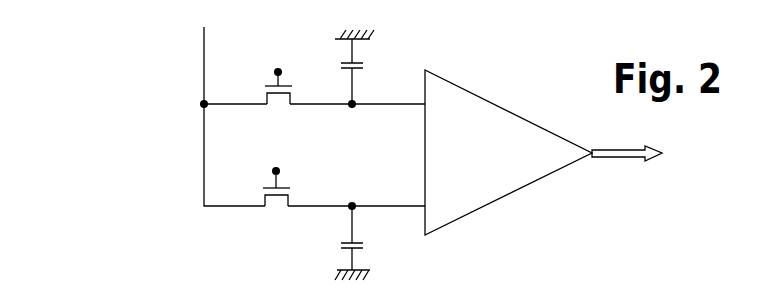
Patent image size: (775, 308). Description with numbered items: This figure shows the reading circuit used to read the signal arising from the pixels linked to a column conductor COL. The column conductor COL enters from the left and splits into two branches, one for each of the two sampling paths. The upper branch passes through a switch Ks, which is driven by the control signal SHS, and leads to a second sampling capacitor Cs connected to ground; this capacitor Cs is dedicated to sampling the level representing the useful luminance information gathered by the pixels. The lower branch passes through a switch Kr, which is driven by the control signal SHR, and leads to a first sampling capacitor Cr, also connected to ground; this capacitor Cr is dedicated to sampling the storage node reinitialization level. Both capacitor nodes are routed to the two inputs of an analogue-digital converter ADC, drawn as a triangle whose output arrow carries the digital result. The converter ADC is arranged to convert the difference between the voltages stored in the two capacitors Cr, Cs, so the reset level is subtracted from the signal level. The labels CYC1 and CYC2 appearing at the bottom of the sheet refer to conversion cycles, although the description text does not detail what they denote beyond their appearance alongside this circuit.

The column conductor COL is at (207, 114).
The signal sampling control signal SHS is at (267, 59).
The second switch Ks is at (278, 102).
The second sampling capacitor Cs is at (366, 69).
The reset sampling control signal SHR is at (302, 164).
The first switch Kr is at (277, 204).
The first sampling capacitor Cr is at (365, 241).
The analogue-digital converter ADC is at (543, 152).
The first conversion cycle CYC1 is at (485, 303).
The second conversion cycle CYC2 is at (715, 303).